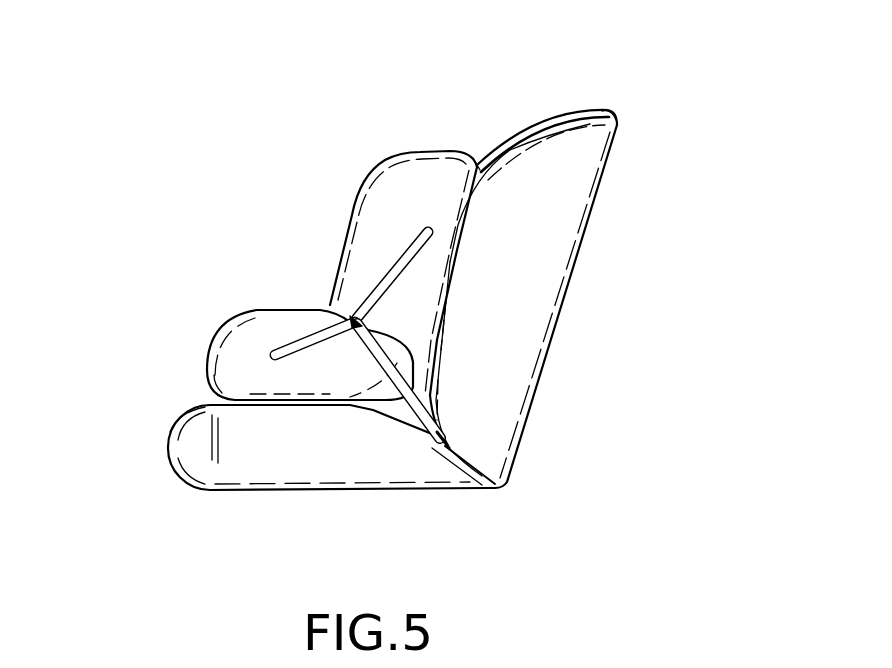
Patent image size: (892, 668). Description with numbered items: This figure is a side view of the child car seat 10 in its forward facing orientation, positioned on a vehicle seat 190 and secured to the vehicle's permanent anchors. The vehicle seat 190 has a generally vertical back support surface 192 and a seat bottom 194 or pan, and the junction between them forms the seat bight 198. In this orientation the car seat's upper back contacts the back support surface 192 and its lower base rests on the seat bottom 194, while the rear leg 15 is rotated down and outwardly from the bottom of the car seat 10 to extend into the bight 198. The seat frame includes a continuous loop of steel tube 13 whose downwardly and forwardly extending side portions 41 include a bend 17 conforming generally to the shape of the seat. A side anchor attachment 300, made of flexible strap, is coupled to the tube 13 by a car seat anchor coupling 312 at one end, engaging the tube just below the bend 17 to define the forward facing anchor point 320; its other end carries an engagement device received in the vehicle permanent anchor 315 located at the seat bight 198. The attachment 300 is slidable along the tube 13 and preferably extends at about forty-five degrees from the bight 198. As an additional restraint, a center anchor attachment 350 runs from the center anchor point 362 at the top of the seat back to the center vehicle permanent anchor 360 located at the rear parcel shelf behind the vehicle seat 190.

The car seat 10 is at (376, 164).
The tube 13 is at (352, 310).
The rear leg 15 is at (368, 410).
The bend 17 is at (333, 308).
The side portion 41 is at (410, 254).
The vehicle seat 190 is at (675, 196).
The back support surface 192 is at (507, 167).
The vehicle seat bottom 194 is at (167, 433).
The seat bight 198 is at (436, 386).
The side anchor attachment 300 is at (428, 443).
The car seat anchor coupling 312 is at (352, 348).
The vehicle permanent anchor 315 is at (452, 436).
The forward facing anchor point 320 is at (380, 332).
The center anchor attachment 350 is at (538, 118).
The center vehicle permanent anchor 360 is at (612, 113).
The center anchor point 362 is at (476, 160).